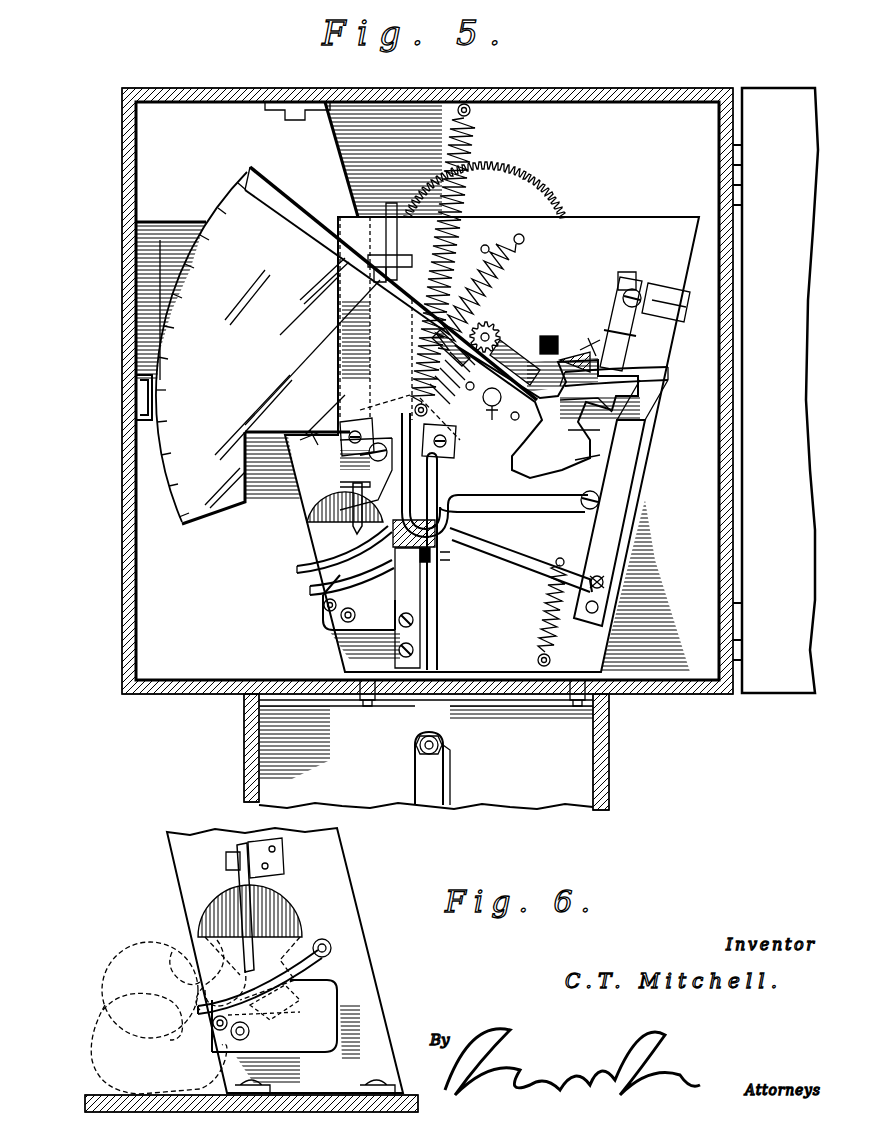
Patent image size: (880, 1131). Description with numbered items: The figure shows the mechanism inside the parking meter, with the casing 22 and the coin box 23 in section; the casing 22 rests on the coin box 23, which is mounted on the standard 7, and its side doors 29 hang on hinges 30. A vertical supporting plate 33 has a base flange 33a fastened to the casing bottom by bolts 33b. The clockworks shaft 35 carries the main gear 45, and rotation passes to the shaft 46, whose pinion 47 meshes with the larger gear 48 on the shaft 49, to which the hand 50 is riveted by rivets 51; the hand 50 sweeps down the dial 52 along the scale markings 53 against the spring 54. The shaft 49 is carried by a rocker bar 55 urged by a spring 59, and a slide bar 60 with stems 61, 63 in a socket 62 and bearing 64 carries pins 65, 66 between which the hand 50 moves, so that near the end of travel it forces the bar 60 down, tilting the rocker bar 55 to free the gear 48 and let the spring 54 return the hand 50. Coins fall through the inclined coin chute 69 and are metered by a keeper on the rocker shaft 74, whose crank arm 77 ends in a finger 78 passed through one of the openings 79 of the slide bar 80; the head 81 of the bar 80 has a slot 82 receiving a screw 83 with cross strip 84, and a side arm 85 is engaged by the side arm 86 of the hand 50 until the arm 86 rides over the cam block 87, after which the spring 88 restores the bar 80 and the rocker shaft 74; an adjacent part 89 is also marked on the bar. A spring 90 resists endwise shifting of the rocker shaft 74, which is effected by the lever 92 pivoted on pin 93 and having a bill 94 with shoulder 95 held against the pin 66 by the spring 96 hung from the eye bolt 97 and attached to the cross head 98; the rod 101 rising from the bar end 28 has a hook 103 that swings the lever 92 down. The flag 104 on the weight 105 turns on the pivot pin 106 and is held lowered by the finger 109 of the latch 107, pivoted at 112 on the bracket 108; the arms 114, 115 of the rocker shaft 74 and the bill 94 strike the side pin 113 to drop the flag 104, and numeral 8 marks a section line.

In FIG. 5, the standard 7 is at (205, 160).
In FIG. 5, the section line 8- 8 is at (450, 401).
In FIG. 5, the meter box or casing 22 is at (592, 88).
In FIG. 6, the meter box or casing 22 is at (90, 1095).
In FIG. 5, the coin box 23 is at (612, 775).
In FIG. 5, the upper end of the bar 28 is at (450, 786).
In FIG. 5, the door 29 is at (772, 102).
In FIG. 5, the hinge 30 is at (742, 175).
In FIG. 5, the supporting plate 33 is at (622, 222).
In FIG. 5, the base flange 33a is at (482, 672).
In FIG. 5, the bolts or fasteners 33b is at (367, 706).
In FIG. 5, the shaft of the clockworks 35 is at (487, 244).
In FIG. 5, the main gear 45 is at (548, 188).
In FIG. 5, the shaft of the clockworks 46 is at (485, 350).
In FIG. 5, the small gear or pinion 47 is at (503, 322).
In FIG. 5, the larger gear 48 is at (500, 356).
In FIG. 5, the shaft 49 is at (467, 378).
In FIG. 5, the hand or pointer 50 is at (391, 283).
In FIG. 5, the rivets 51 is at (518, 420).
In FIG. 5, the dial 52 is at (215, 218).
In FIG. 5, the scale markings 53 is at (150, 358).
In FIG. 5, the spring 54 is at (453, 300).
In FIG. 5, the rocker bar 55 is at (483, 398).
In FIG. 5, the spring 59 is at (354, 428).
In FIG. 5, the slide bar or plunger 60 is at (376, 352).
In FIG. 5, the stem 61 is at (432, 570).
In FIG. 5, the socket 62 is at (432, 580).
In FIG. 5, the stem 63 is at (397, 242).
In FIG. 5, the mounting or bearing 64 is at (397, 261).
In FIG. 5, the upper side arm or pin 65 is at (345, 298).
In FIG. 5, the lower side arm or pin 66 is at (370, 455).
In FIG. 5, the coin chute 69 is at (310, 150).
In FIG. 6, the coin chute 69 is at (338, 875).
In FIG. 5, the rocker shaft 74 is at (440, 500).
In FIG. 6, the rocker shaft 74 is at (334, 948).
In FIG. 5, the crank arm 77 is at (514, 558).
In FIG. 5, the finger 78 is at (602, 582).
In FIG. 5, the openings 79 is at (600, 606).
In FIG. 5, the slide bar 80 is at (618, 520).
In FIG. 5, the head 81 is at (640, 352).
In FIG. 5, the slot 82 is at (620, 326).
In FIG. 5, the pin or screw 83 is at (620, 300).
In FIG. 5, the cross strip 84 is at (658, 300).
In FIG. 5, the side arm 85 is at (652, 395).
In FIG. 5, the side arm 86 is at (578, 428).
In FIG. 5, the cam block 87 is at (556, 338).
In FIG. 5, the spring 88 is at (550, 615).
In FIG. 5, the link 89 is at (650, 378).
In FIG. 6, the spring 90 is at (330, 942).
In FIG. 5, the lever 92 is at (492, 495).
In FIG. 5, the pivot pin or bolt 93 is at (588, 492).
In FIG. 5, the bill 94 is at (446, 562).
In FIG. 5, the side extension or shoulder 95 is at (330, 492).
In FIG. 5, the spring 96 is at (467, 150).
In FIG. 5, the eye bolt 97 is at (470, 110).
In FIG. 5, the cross head 98 is at (414, 404).
In FIG. 5, the rod 101 is at (436, 628).
In FIG. 5, the side arm or hook 103 is at (450, 448).
In FIG. 5, the visible signal or flag 104 is at (315, 528).
In FIG. 6, the visible signal or flag 104 is at (200, 916).
In FIG. 5, the weight 105 is at (336, 648).
In FIG. 6, the weight 105 is at (293, 1032).
In FIG. 5, the pivot pin 106 is at (340, 628).
In FIG. 6, the pivot pin 106 is at (252, 1040).
In FIG. 5, the latch 107 is at (353, 533).
In FIG. 6, the latch 107 is at (240, 882).
In FIG. 6, the bracket 108 is at (276, 856).
In FIG. 5, the finger 109 is at (382, 570).
In FIG. 6, the finger 109 is at (260, 982).
In FIG. 6, the pivot 112 is at (232, 860).
In FIG. 5, the side pin 113 is at (323, 608).
In FIG. 6, the side pin 113 is at (214, 1030).
In FIG. 5, the arm 114 is at (310, 590).
In FIG. 6, the arm 114 is at (275, 1002).
In FIG. 5, the arm 115 is at (298, 570).
In FIG. 6, the arm 115 is at (275, 1030).